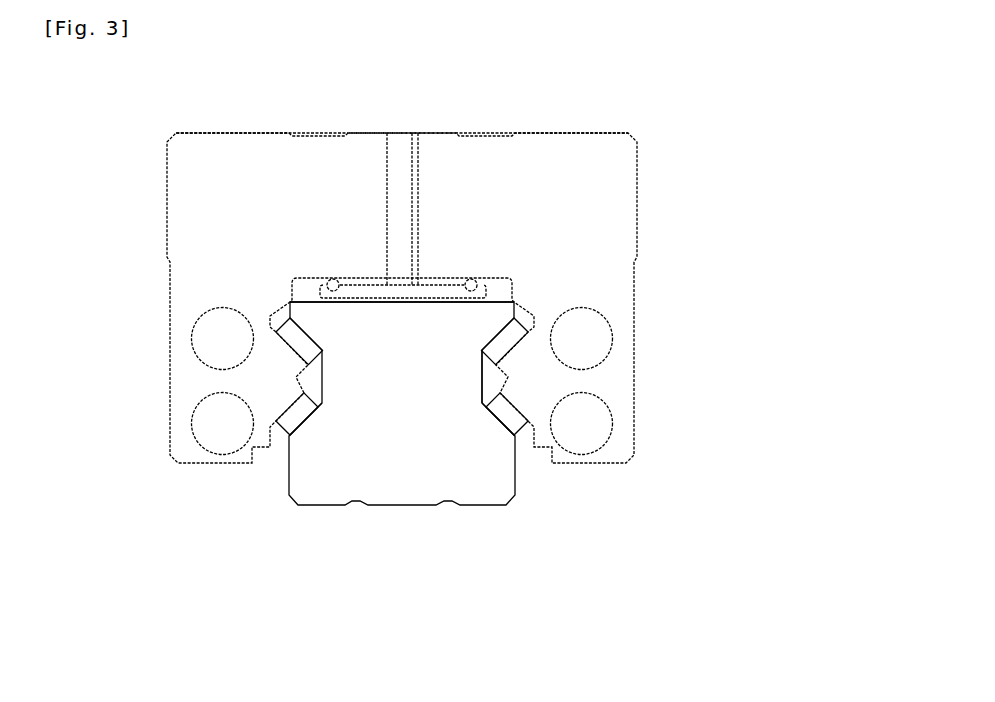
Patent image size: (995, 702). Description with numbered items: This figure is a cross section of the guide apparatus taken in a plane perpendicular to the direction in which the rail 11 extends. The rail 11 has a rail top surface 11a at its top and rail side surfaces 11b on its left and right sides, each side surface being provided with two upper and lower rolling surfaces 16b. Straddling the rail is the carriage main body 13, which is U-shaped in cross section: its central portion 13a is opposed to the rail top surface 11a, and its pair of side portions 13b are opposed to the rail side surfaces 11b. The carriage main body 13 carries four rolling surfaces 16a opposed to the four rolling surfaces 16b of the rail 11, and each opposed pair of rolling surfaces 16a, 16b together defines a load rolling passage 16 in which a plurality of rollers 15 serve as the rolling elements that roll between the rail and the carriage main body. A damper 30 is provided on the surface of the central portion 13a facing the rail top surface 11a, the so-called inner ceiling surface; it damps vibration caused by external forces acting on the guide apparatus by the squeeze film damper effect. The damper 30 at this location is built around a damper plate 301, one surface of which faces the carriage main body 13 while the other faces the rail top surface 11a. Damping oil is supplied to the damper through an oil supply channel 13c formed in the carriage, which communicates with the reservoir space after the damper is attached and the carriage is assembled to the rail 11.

The rail 11 is at (403, 485).
The rail top surface 11a is at (506, 306).
The rail side surface 11b is at (480, 323).
The carriage main body 13 is at (723, 200).
The central portion 13a is at (460, 213).
The side portions 13b is at (192, 375).
The oil supply channel 13c is at (404, 150).
The rollers 15 is at (306, 414).
The load rolling passages 16 is at (385, 484).
The rolling surfaces 16a is at (282, 397).
The rolling surfaces 16b is at (303, 415).
The damper 30 is at (386, 190).
The damper plate 301 is at (374, 288).